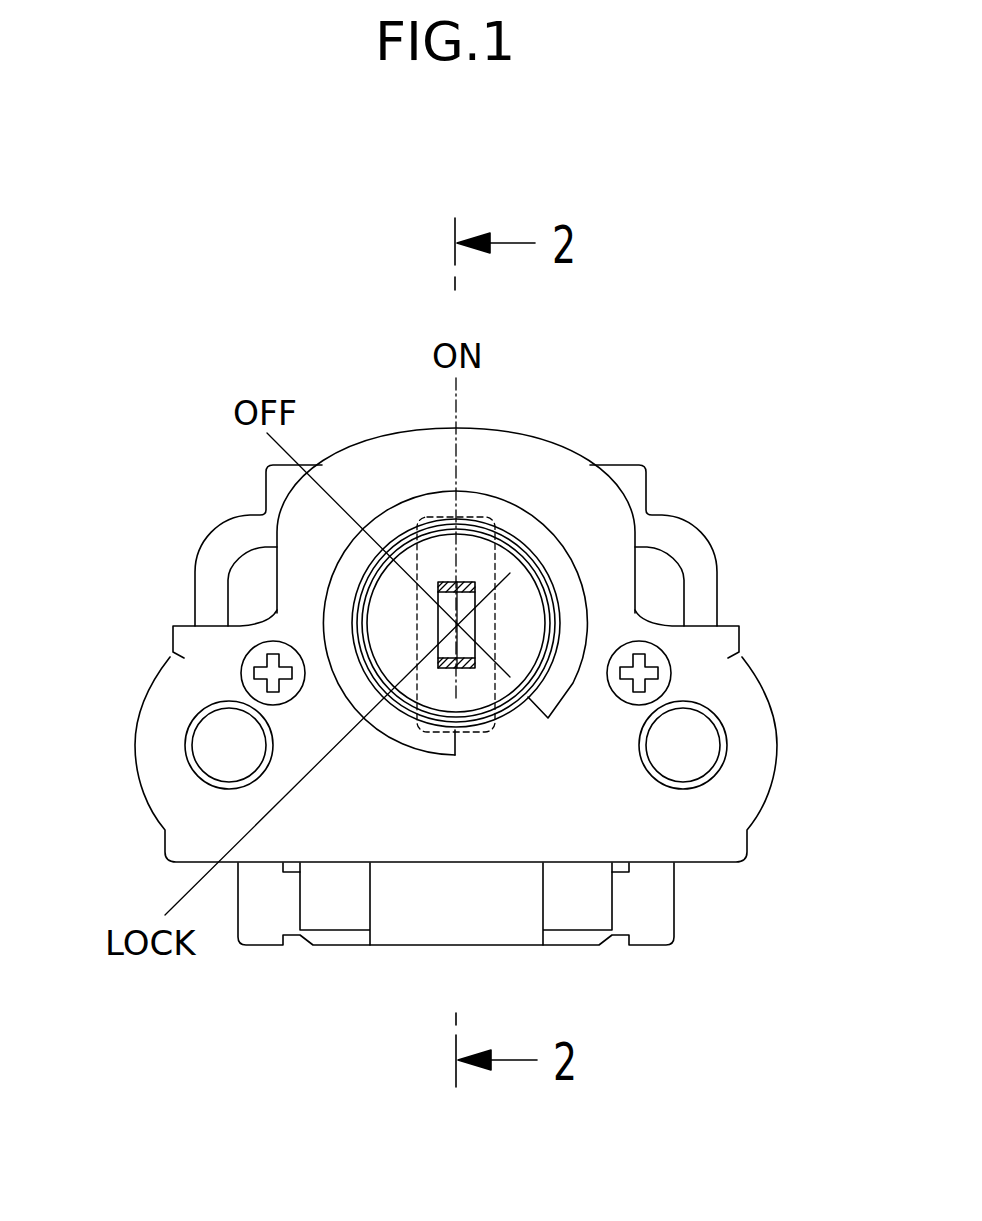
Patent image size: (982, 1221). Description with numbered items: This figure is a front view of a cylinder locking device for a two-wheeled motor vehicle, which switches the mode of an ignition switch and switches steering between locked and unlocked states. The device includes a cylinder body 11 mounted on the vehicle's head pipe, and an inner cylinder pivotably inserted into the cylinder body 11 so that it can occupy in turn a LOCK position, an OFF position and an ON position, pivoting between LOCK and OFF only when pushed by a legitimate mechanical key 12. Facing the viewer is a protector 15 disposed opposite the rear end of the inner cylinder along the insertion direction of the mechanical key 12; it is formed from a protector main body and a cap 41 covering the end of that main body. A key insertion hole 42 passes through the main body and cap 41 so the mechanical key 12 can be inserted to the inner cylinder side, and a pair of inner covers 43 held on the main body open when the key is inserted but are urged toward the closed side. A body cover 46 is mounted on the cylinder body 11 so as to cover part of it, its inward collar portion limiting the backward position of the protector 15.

The cylinder body 11 is at (680, 543).
The mechanical key 12 is at (478, 513).
The protector 15 is at (534, 559).
The cap 41 is at (390, 593).
The key insertion hole 42 is at (462, 668).
The inner covers 43 is at (455, 623).
The body cover 46 is at (622, 612).